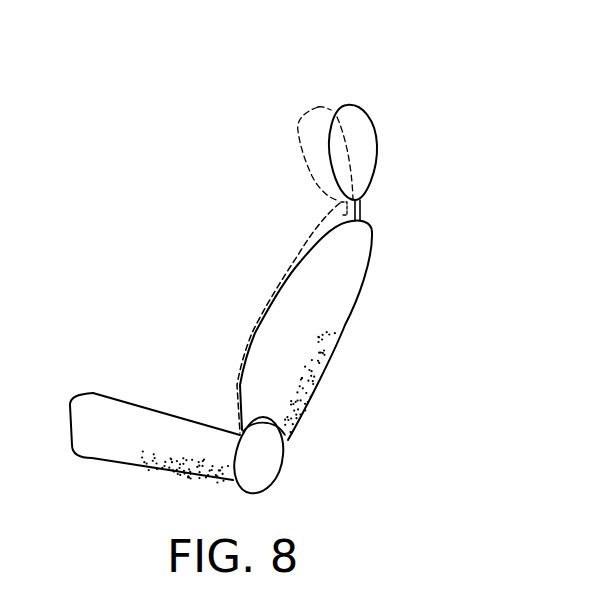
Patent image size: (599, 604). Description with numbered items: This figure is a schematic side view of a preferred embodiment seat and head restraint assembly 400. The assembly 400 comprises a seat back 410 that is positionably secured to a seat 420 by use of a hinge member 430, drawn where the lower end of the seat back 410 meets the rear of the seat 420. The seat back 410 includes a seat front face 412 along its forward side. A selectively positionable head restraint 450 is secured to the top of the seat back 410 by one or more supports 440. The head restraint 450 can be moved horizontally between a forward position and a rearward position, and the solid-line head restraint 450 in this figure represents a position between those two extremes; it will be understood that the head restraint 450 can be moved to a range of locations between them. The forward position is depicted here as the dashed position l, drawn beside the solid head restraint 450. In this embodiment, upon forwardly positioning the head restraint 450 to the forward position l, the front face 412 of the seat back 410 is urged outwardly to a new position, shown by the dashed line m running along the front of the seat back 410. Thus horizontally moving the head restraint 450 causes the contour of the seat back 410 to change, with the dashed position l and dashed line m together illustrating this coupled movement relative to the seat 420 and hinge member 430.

The seat and head restraint assembly 400 is at (519, 96).
The seat back 410 is at (327, 300).
The seat front face 412 is at (253, 338).
The seat 420 is at (105, 450).
The hinge member 430 is at (265, 460).
The supports 440 is at (362, 218).
The head restraint 450 is at (368, 143).
The forward position l is at (302, 157).
The dashed line (outwardly urged front face position) m is at (312, 237).